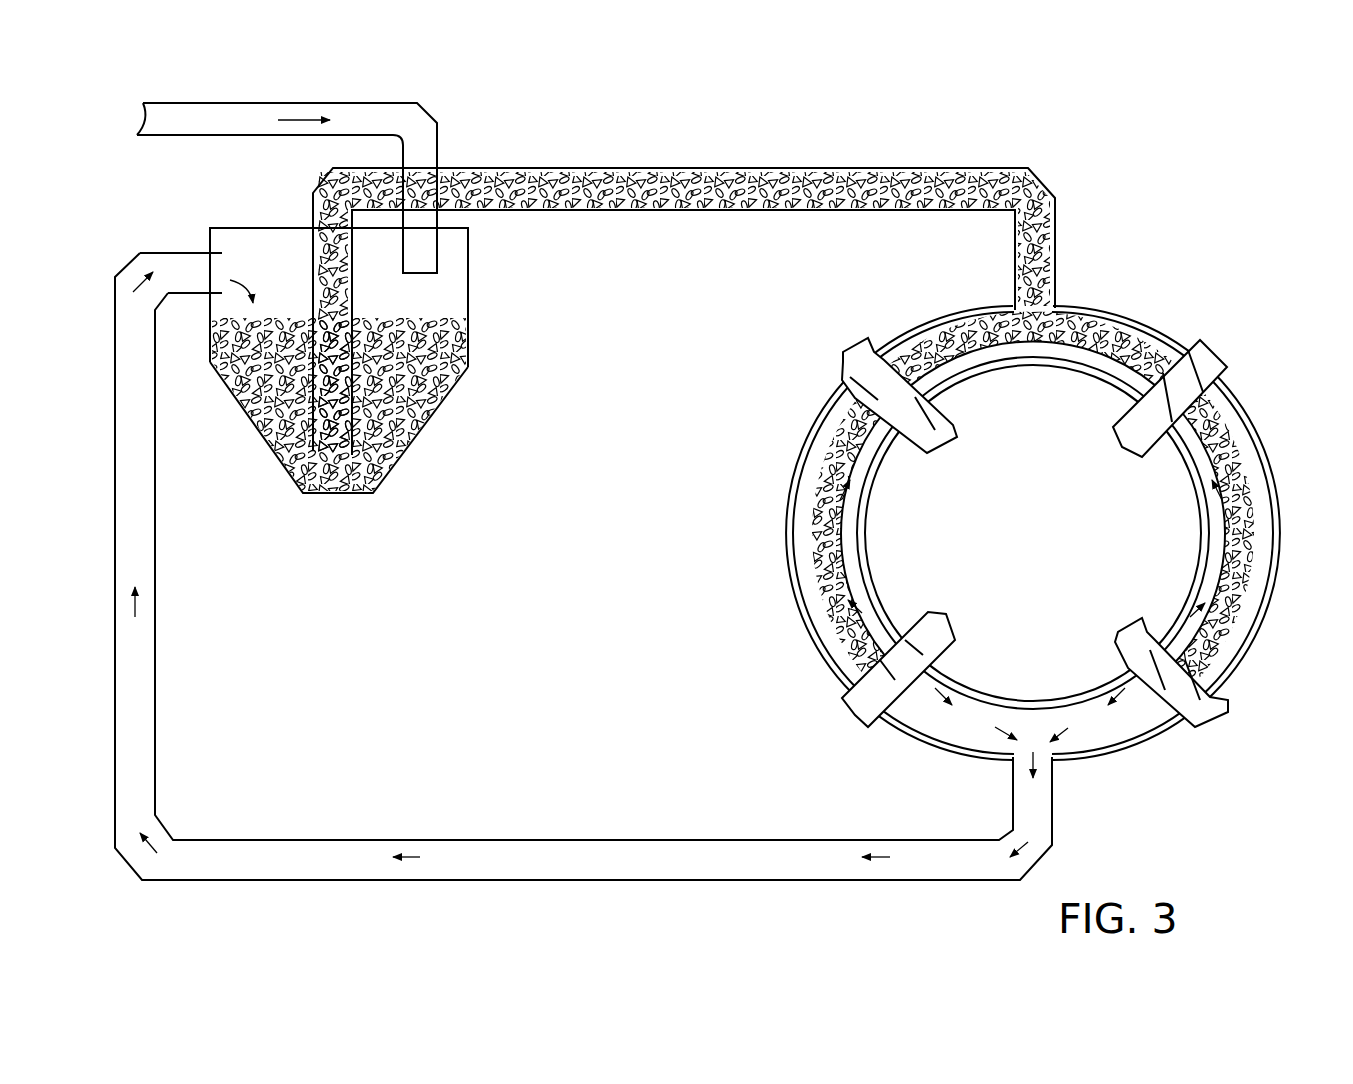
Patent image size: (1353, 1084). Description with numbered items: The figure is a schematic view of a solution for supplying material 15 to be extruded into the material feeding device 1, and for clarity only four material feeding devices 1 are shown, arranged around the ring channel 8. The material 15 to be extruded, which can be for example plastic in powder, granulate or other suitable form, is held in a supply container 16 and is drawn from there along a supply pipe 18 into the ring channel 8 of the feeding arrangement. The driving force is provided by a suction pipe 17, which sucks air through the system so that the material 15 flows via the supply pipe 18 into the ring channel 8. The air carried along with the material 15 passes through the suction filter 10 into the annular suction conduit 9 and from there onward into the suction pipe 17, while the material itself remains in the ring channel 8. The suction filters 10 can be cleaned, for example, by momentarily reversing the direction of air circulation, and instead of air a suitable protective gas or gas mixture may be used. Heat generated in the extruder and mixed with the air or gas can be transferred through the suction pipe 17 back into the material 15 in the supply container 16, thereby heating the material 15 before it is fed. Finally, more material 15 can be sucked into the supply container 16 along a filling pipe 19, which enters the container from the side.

The material feeding device 1 is at (1059, 504).
The ring channel 8 is at (1143, 340).
The annular suction conduit 9 is at (1067, 347).
The suction filter 10 is at (1130, 370).
The material 15 is at (410, 430).
The supply container 16 is at (407, 457).
The suction pipe 17 is at (1032, 808).
The supply pipe 18 is at (1044, 183).
The filling pipe 19 is at (195, 122).